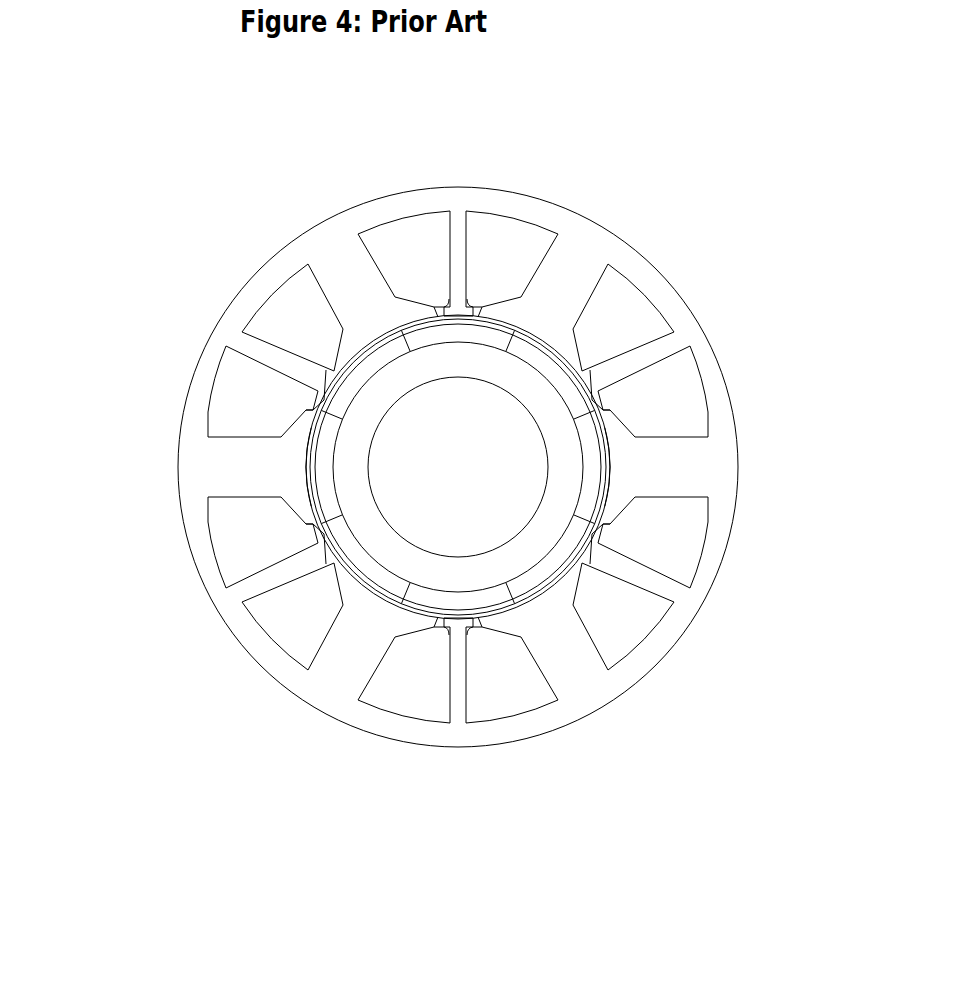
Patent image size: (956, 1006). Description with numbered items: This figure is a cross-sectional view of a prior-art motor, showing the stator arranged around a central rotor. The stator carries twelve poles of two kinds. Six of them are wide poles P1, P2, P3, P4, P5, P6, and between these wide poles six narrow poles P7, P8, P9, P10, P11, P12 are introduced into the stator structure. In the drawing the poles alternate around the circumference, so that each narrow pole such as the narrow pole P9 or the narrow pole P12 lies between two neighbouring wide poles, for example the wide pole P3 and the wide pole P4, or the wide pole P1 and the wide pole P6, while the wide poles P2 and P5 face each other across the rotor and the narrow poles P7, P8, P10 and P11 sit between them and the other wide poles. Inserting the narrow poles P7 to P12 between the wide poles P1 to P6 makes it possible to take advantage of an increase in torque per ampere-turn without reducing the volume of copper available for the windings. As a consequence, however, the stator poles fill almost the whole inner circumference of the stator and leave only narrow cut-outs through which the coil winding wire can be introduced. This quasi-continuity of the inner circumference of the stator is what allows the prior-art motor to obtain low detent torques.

The wide pole P1 is at (378, 620).
The wide pole P2 is at (293, 463).
The wide pole P3 is at (372, 323).
The wide pole P4 is at (543, 322).
The wide pole P5 is at (625, 472).
The wide pole P6 is at (543, 618).
The narrow pole P7 is at (320, 552).
The narrow pole P8 is at (318, 383).
The narrow pole P9 is at (459, 306).
The narrow pole P10 is at (598, 382).
The narrow pole P11 is at (597, 545).
The narrow pole P12 is at (460, 638).